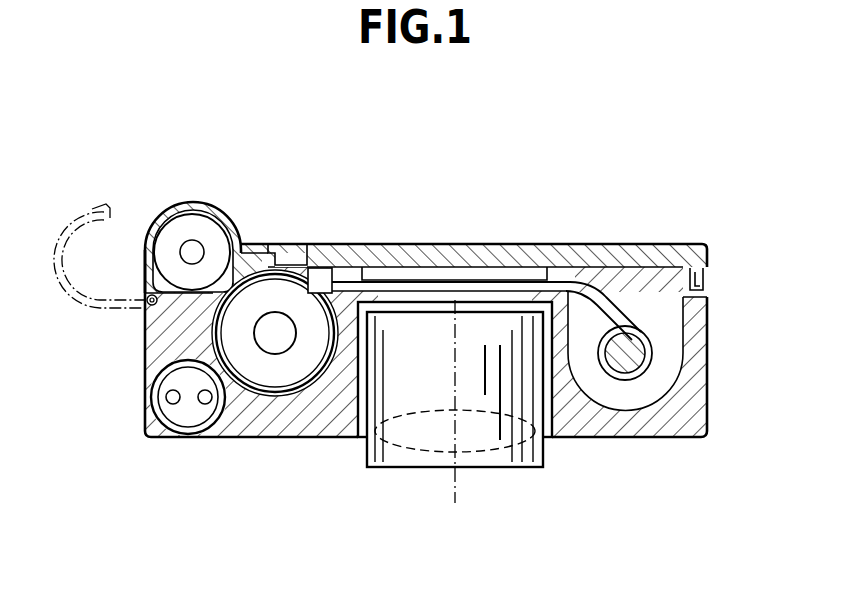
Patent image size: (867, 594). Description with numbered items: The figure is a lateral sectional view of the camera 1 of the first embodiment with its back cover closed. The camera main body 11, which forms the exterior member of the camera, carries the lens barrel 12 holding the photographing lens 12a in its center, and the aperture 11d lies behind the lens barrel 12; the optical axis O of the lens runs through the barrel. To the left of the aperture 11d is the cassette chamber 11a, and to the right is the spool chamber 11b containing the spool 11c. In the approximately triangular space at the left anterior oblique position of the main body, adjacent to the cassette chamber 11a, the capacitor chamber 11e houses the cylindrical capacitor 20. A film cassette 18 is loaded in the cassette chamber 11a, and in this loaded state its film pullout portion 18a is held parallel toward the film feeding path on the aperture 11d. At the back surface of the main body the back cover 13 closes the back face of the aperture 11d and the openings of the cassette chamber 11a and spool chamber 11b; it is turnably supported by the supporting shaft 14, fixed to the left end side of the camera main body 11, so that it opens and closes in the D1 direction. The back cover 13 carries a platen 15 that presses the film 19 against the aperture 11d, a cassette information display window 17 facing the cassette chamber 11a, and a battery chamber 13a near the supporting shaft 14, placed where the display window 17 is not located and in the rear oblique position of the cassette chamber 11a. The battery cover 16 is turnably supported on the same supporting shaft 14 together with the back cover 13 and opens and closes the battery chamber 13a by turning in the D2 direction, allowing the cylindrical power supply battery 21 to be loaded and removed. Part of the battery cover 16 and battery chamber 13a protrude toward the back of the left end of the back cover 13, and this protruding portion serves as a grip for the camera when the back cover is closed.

The camera 1 is at (687, 223).
The camera main body 11 is at (627, 427).
The cassette chamber 11a is at (278, 397).
The spool chamber 11b is at (665, 397).
The spool 11c is at (633, 357).
The aperture 11d is at (418, 290).
The capacitor chamber 11e is at (188, 433).
The lens barrel 12 is at (544, 455).
The photographing lens 12a is at (403, 447).
The back cover 13 is at (600, 256).
The battery chamber 13a is at (222, 228).
The supporting shaft 14 is at (147, 308).
The platen 15 is at (525, 275).
The battery cover 16 is at (168, 207).
The cassette information display window 17 is at (298, 245).
The film cassette 18 is at (297, 300).
The film pullout portion 18a is at (333, 272).
The film 19 is at (617, 303).
The capacitor 20 is at (175, 413).
The power supply battery 21 is at (190, 226).
The optical axis O is at (457, 490).
The D1 direction D1 is at (548, 213).
The D2 direction D2 is at (85, 282).